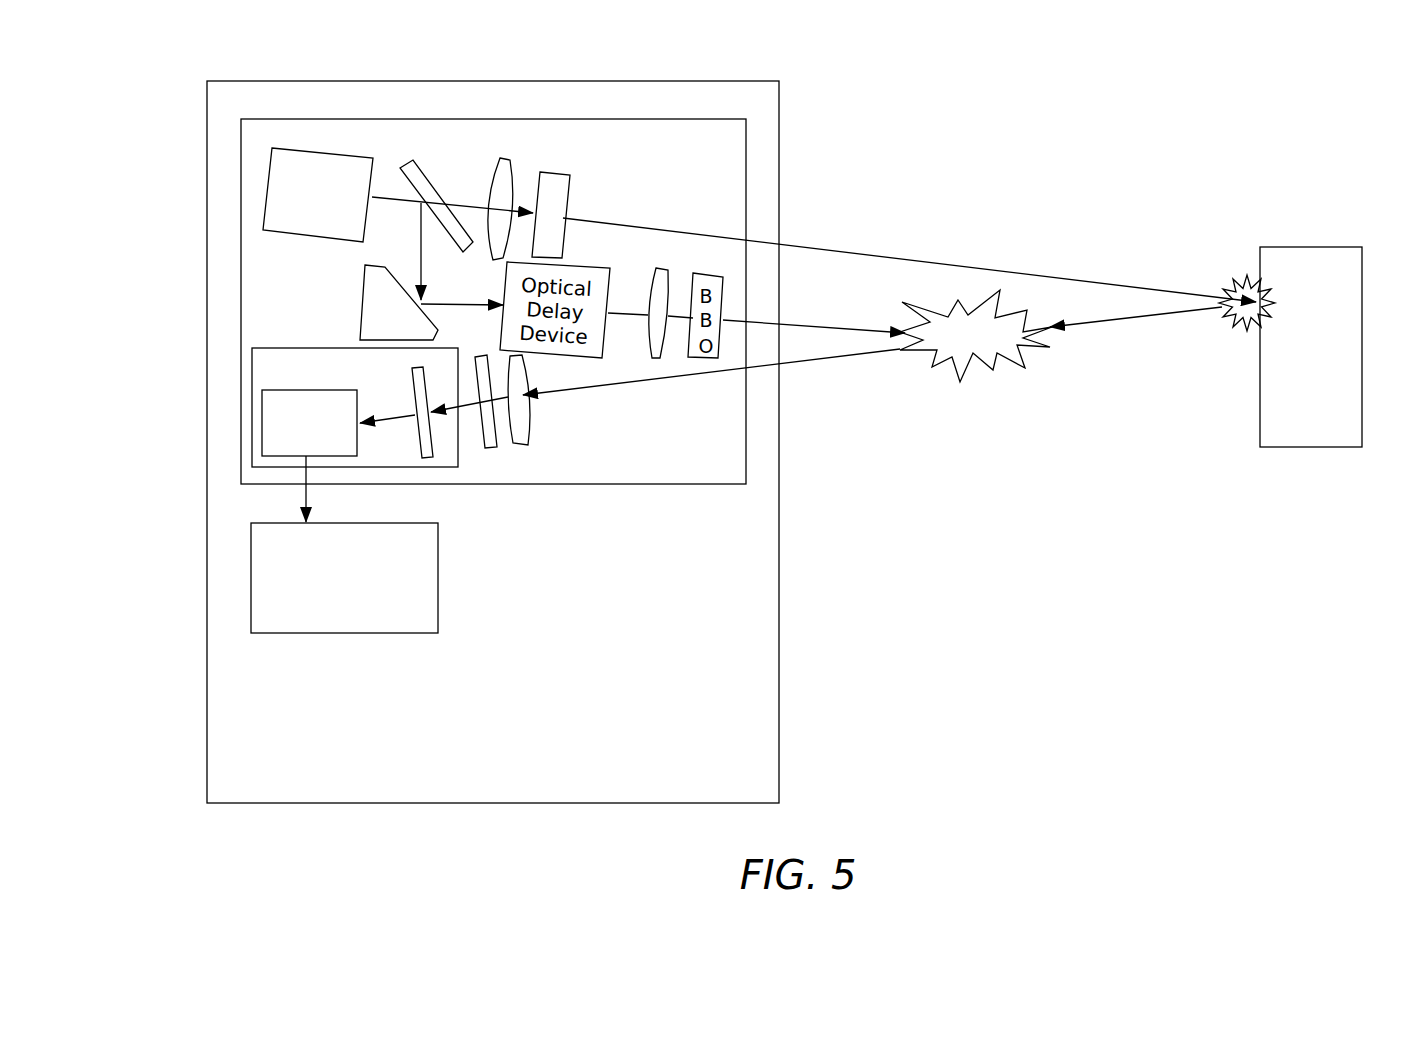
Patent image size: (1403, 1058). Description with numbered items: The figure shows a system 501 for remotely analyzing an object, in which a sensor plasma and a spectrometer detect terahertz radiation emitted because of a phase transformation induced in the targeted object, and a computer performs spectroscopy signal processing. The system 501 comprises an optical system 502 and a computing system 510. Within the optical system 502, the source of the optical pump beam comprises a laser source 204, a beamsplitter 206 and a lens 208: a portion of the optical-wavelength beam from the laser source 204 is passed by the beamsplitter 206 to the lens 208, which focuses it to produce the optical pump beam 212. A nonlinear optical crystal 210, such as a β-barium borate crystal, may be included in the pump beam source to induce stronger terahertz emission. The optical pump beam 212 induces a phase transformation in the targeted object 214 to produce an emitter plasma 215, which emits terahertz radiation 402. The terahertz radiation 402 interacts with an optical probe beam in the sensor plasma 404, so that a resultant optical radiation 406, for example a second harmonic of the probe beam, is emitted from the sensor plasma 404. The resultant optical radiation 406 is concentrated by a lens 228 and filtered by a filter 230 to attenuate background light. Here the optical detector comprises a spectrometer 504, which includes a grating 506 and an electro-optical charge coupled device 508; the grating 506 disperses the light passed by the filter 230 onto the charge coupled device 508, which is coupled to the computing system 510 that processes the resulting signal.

The system 501 is at (780, 92).
The optical system 502 is at (640, 118).
The laser source 204 is at (293, 149).
The beamsplitter 206 is at (413, 168).
The lens 208 is at (510, 166).
The nonlinear optical crystal 210 is at (570, 183).
The optical pump beam 212 is at (867, 255).
The targeted object 214 is at (1288, 247).
The emitter plasma 215 is at (1243, 292).
The terahertz radiation 402 is at (1153, 318).
The sensor plasma 404 is at (993, 372).
The resultant optical radiation 406 is at (822, 358).
The lens 228 is at (530, 432).
The filter 230 is at (497, 445).
The spectrometer 504 is at (283, 346).
The grating 506 is at (432, 458).
The electro-optical charge coupled device 508 is at (262, 433).
The computing system 510 is at (438, 592).